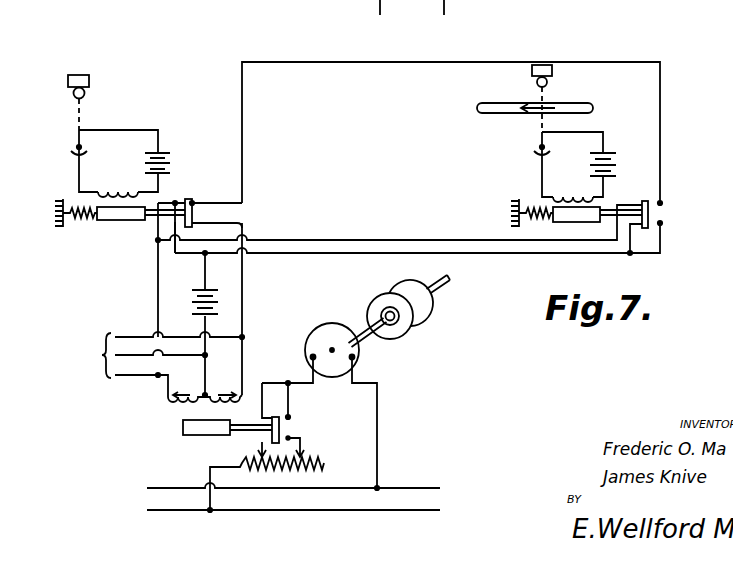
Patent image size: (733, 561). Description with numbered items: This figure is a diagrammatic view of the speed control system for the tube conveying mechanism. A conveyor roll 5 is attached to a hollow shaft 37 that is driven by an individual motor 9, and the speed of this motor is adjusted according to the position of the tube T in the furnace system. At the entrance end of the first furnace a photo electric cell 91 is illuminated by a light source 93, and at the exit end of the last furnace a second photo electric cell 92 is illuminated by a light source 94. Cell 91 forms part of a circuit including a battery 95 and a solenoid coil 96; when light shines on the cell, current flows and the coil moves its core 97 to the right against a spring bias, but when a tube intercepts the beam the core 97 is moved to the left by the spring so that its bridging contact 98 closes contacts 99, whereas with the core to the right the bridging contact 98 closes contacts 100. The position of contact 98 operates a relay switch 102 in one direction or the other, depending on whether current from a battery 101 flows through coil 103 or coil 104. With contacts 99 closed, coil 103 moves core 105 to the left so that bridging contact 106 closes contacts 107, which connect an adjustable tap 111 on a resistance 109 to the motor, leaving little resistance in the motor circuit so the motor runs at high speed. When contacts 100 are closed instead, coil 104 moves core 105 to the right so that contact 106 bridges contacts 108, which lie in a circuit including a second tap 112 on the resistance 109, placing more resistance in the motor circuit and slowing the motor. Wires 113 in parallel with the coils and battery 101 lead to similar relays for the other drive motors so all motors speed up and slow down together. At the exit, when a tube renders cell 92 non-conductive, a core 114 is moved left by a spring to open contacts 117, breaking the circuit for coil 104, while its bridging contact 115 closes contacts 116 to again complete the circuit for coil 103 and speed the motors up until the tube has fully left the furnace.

The conveyor roll 5 is at (392, 334).
The motor 9 is at (327, 334).
The hollow shaft 37 is at (446, 284).
The tape T is at (489, 104).
The photo electric cell 91 is at (537, 154).
The photo electric cell 92 is at (75, 151).
The light source 93 is at (543, 65).
The light source 94 is at (80, 75).
The battery 95 is at (612, 160).
The solenoid coil 96 is at (583, 188).
The core 97 is at (576, 222).
The bridging contact 98 is at (650, 211).
The contacts 99 is at (644, 200).
The contacts 100 is at (662, 226).
The battery 101 is at (200, 290).
The relay switch 102 is at (227, 377).
The coil 103 is at (176, 410).
The coil 104 is at (236, 407).
The core 105 is at (192, 435).
The bridging contact 106 is at (280, 431).
The contacts 107 is at (276, 440).
The contacts 108 is at (290, 440).
The resistance 109 is at (280, 472).
The adjustable tap 111 is at (258, 452).
The adjustable tap 112 is at (303, 455).
The wires 113 is at (151, 364).
The core 114 is at (103, 220).
The bridging contact 115 is at (188, 199).
The contacts 116 is at (175, 222).
The contacts 117 is at (194, 205).